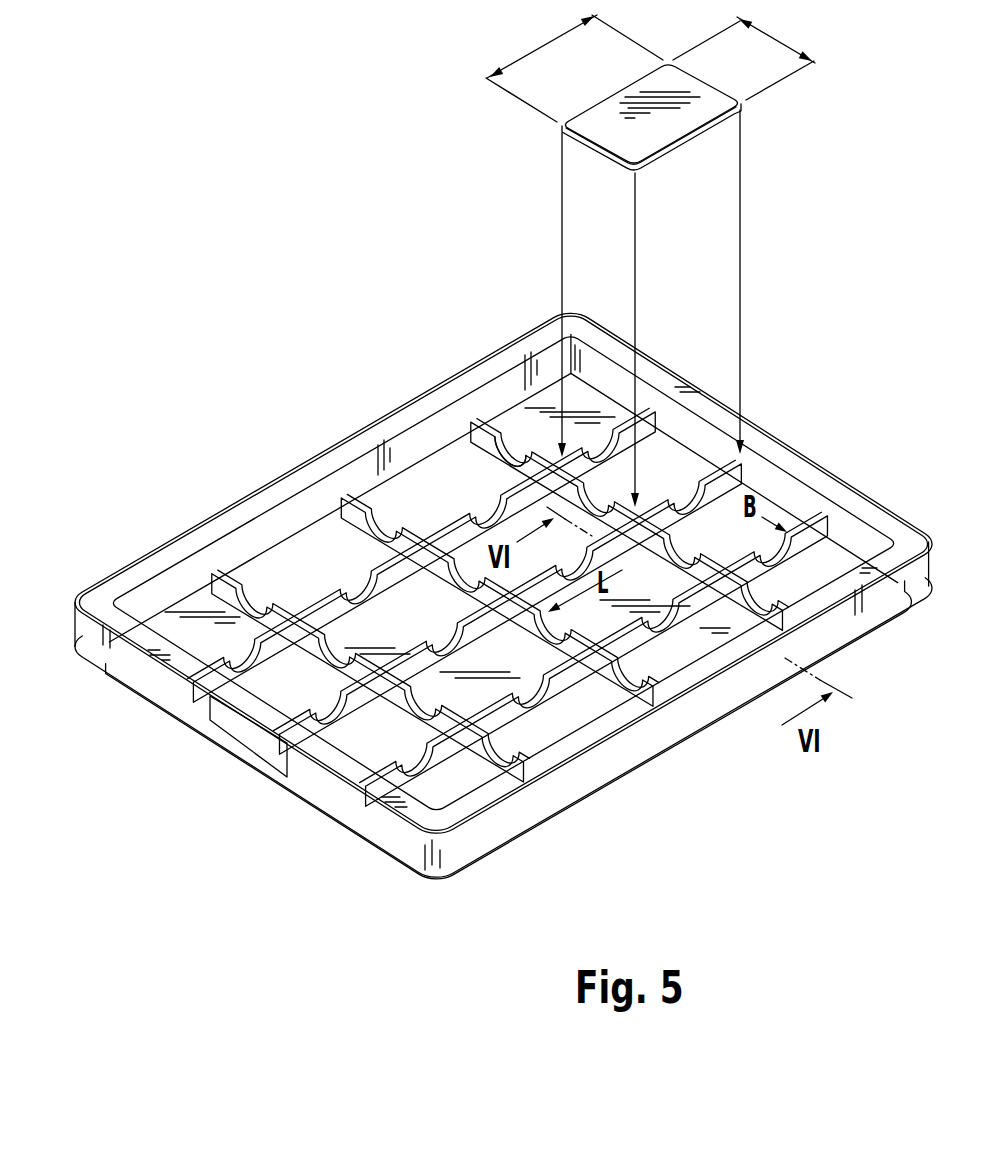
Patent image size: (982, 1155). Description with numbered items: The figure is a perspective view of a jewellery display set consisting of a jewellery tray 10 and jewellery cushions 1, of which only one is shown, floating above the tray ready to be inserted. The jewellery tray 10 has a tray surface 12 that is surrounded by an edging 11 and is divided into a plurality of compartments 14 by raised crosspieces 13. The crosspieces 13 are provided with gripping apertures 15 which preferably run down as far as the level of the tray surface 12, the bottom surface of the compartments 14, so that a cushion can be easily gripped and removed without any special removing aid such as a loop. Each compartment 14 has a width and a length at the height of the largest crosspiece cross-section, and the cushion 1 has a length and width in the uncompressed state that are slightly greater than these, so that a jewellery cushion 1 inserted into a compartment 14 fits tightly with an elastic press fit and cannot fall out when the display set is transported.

The jewellery cushion 1 is at (656, 129).
The jewellery tray 10 is at (360, 416).
The edging 11 is at (546, 758).
The tray surface 12 is at (197, 595).
The crosspiece 13 is at (478, 405).
The compartment 14 is at (411, 635).
The gripping aperture 15 is at (506, 453).